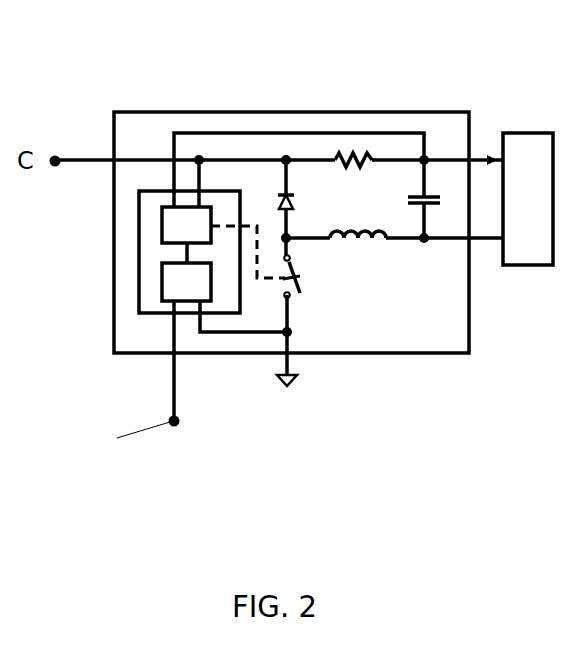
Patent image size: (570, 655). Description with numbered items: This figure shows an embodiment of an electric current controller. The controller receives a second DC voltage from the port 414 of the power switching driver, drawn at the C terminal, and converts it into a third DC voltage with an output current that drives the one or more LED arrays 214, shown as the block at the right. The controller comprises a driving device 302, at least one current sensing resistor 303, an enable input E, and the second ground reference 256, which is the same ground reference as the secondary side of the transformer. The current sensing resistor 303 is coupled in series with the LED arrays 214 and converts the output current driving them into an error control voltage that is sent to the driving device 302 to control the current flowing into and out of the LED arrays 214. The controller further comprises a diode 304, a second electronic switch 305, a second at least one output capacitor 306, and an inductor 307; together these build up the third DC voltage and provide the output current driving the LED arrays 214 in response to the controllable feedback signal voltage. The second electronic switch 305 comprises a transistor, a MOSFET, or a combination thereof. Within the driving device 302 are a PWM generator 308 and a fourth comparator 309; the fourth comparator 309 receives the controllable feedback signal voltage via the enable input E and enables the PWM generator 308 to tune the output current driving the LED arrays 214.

The port 414 is at (54, 155).
The driving device 302 is at (132, 235).
The PWM generator 308 is at (163, 203).
The fourth comparator 309 is at (158, 290).
The diode 304 is at (278, 197).
The second electronic switch 305 is at (298, 297).
The second ground reference 256 is at (282, 386).
The current sensing resistor 303 is at (360, 155).
The inductor 307 is at (347, 225).
The second at least one output capacitor 306 is at (435, 196).
The LED arrays 214 is at (533, 132).